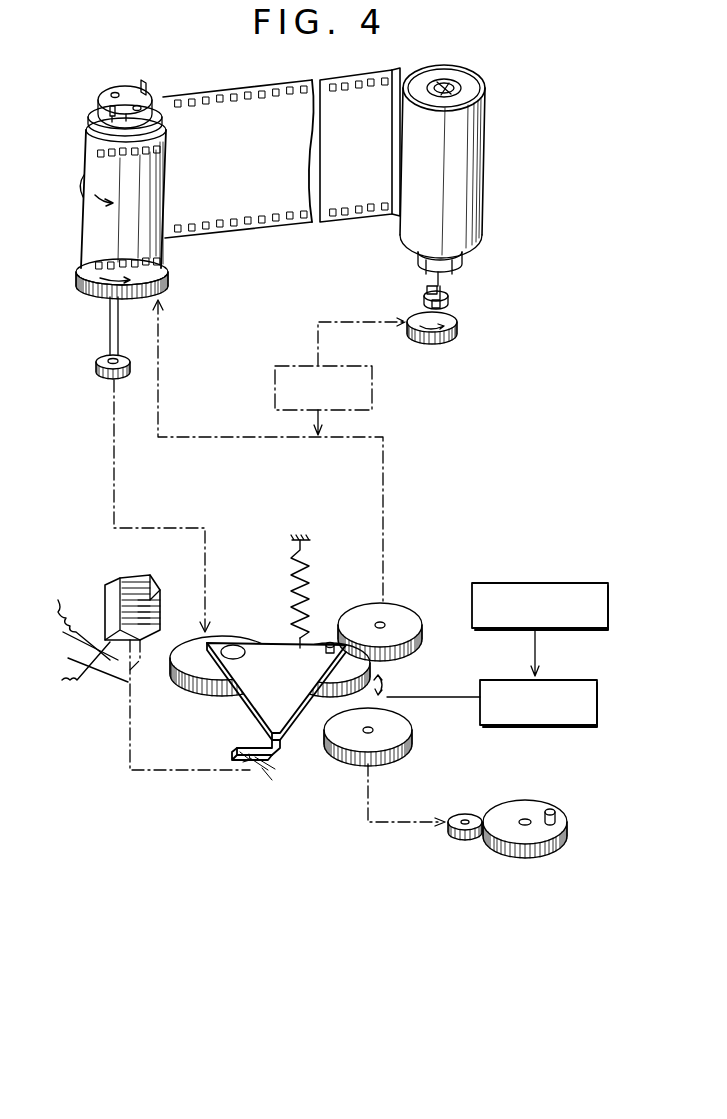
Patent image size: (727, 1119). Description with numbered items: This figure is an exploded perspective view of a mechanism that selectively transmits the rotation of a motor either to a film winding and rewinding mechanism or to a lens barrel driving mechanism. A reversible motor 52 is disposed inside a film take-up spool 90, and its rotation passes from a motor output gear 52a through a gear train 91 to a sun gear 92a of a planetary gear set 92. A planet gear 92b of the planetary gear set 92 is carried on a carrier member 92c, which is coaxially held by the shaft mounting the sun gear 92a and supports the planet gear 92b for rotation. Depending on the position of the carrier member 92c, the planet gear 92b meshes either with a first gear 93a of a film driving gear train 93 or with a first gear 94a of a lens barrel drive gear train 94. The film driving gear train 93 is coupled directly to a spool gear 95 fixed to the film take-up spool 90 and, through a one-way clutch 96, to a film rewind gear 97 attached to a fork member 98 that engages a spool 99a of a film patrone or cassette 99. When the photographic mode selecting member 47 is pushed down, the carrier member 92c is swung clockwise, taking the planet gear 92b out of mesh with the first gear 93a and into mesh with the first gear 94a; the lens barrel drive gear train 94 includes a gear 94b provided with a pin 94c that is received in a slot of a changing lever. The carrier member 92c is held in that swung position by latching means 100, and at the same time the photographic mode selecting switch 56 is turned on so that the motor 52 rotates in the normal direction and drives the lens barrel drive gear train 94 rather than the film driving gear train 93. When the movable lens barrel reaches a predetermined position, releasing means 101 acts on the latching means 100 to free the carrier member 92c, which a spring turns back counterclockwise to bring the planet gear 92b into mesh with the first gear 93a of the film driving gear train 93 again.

The photographic mode selecting member 47 is at (112, 586).
The reversible motor 52 is at (110, 100).
The motor output gear 52a is at (100, 372).
The photographic mode selecting switch 56 is at (89, 676).
The film take-up spool 90 is at (90, 218).
The gear train 91 is at (116, 496).
The planetary gear set 92 is at (249, 610).
The sun gear 92a is at (190, 654).
The planet gear 92b is at (352, 650).
The carrier member 92c is at (290, 718).
The film driving gear train 93 is at (385, 470).
The first gear of the film drive gear train 93a is at (407, 618).
The lens barrel drive gear train 94 is at (412, 830).
The first gear of the lens barrel drive gear train 94a is at (400, 740).
The gear 94b is at (525, 845).
The pin 94c is at (556, 810).
The spool gear 95 is at (168, 272).
The one-way clutch 96 is at (374, 397).
The film rewind gear 97 is at (460, 313).
The fork member 98 is at (421, 285).
The film patrone or cassette 99 is at (488, 172).
The spool 99a is at (462, 266).
The latching means 100 is at (538, 726).
The releasing means 101 is at (539, 582).